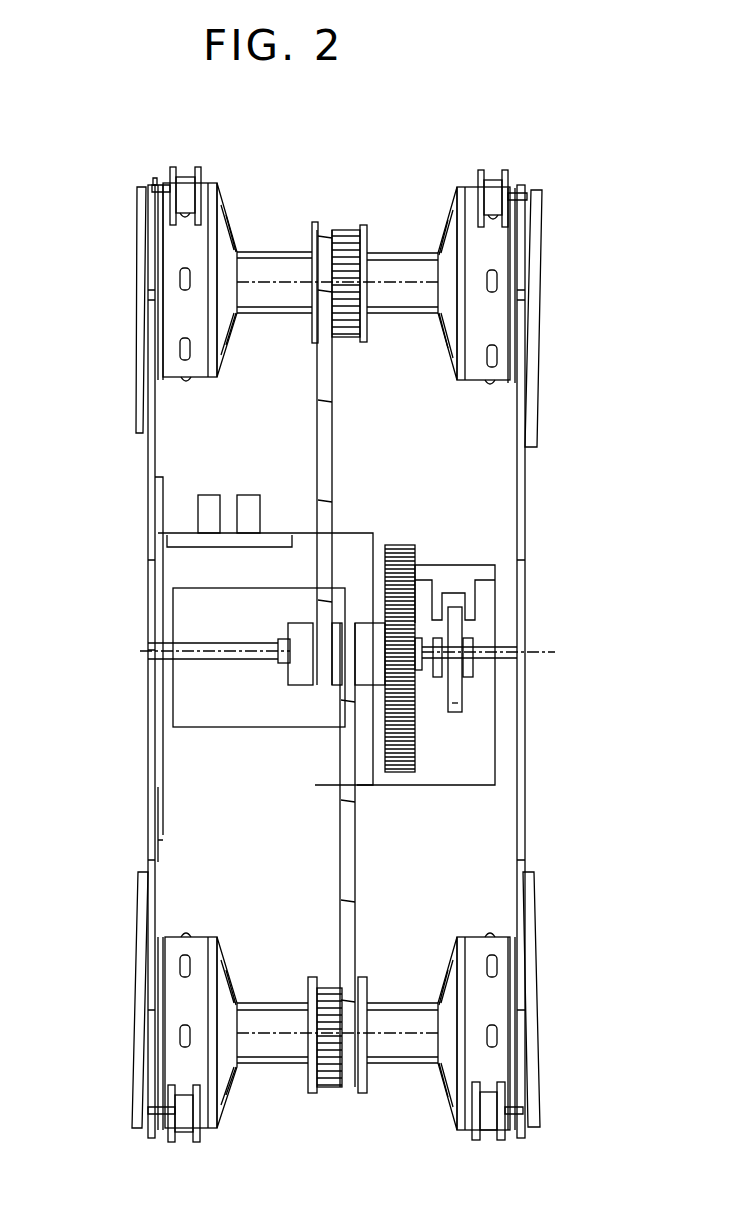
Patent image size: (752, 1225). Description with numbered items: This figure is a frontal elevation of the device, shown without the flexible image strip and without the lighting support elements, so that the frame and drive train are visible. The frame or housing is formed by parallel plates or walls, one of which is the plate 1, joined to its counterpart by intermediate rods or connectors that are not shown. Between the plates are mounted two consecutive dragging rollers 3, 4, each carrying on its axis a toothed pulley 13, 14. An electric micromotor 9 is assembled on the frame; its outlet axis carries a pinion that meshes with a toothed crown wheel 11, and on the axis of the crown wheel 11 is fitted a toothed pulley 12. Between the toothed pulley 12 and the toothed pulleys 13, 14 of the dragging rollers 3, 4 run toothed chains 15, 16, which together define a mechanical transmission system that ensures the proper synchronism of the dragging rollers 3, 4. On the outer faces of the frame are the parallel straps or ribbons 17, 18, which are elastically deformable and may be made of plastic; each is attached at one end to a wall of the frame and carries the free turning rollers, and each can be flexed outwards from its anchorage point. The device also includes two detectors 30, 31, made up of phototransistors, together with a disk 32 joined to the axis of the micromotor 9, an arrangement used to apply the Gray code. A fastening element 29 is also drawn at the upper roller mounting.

The plate 1 is at (160, 530).
The dragging roller 3 is at (226, 228).
The dragging roller 4 is at (225, 1090).
The electric micromotor 9 is at (173, 625).
The toothed crown wheel 11 is at (400, 548).
The toothed pulley 12 is at (300, 668).
The toothed pulley 13 is at (366, 225).
The toothed pulley 14 is at (312, 1095).
The toothed chain 15 is at (330, 378).
The toothed chain 16 is at (345, 890).
The strap 17 is at (135, 207).
The strap 18 is at (140, 1110).
The fastening flange 29 is at (195, 185).
The detector 30 is at (456, 578).
The detector 31 is at (478, 668).
The disk 32 is at (455, 715).